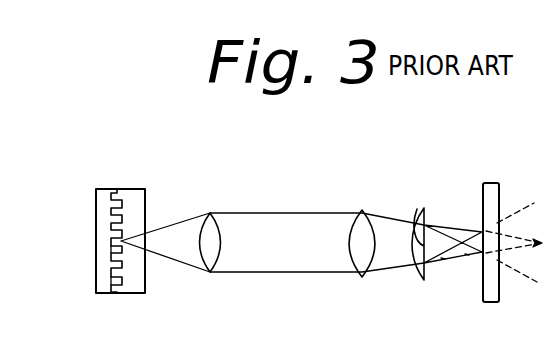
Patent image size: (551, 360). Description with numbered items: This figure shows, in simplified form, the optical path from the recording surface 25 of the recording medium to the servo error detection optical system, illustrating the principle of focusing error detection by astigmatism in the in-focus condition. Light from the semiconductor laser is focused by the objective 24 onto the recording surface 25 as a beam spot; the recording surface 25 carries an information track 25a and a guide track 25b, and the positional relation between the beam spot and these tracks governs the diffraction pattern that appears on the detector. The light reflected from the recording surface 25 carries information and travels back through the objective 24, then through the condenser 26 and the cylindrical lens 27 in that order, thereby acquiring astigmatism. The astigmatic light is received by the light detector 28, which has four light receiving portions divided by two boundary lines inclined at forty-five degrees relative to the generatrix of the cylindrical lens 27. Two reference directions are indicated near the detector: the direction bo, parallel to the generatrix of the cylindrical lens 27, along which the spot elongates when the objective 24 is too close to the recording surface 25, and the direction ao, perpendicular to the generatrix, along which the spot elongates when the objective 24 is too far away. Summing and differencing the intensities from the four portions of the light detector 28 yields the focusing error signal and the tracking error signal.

The objective 24 is at (213, 228).
The recording surface of the recording medium 25 is at (117, 189).
The information track 25a is at (110, 283).
The guide track 25b is at (108, 249).
The condenser 26 is at (358, 228).
The cylindrical lens 27 is at (416, 212).
The light detector 28 is at (483, 183).
The direction a0 ao is at (443, 259).
The direction b0 bo is at (467, 255).